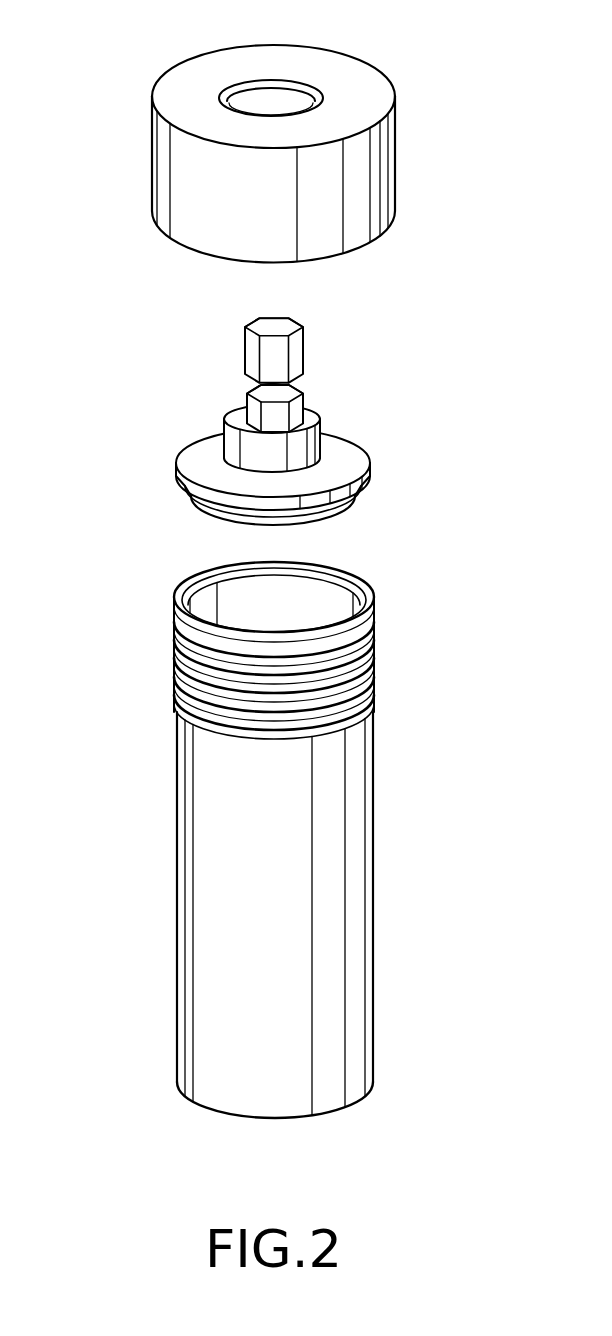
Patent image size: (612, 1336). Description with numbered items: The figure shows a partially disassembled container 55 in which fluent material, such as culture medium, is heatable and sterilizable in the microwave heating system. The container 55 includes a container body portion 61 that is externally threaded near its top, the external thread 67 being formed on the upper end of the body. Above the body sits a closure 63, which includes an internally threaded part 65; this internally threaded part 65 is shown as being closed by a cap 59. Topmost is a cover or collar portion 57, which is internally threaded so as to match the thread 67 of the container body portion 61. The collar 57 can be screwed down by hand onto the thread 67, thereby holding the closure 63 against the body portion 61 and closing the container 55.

The container 55 is at (398, 1123).
The cover or collar portion 57 is at (152, 178).
The cap 59 is at (245, 350).
The container body portion 61 is at (178, 875).
The closure 63 is at (176, 474).
The internally threaded part 65 is at (247, 399).
The thread 67 is at (174, 666).